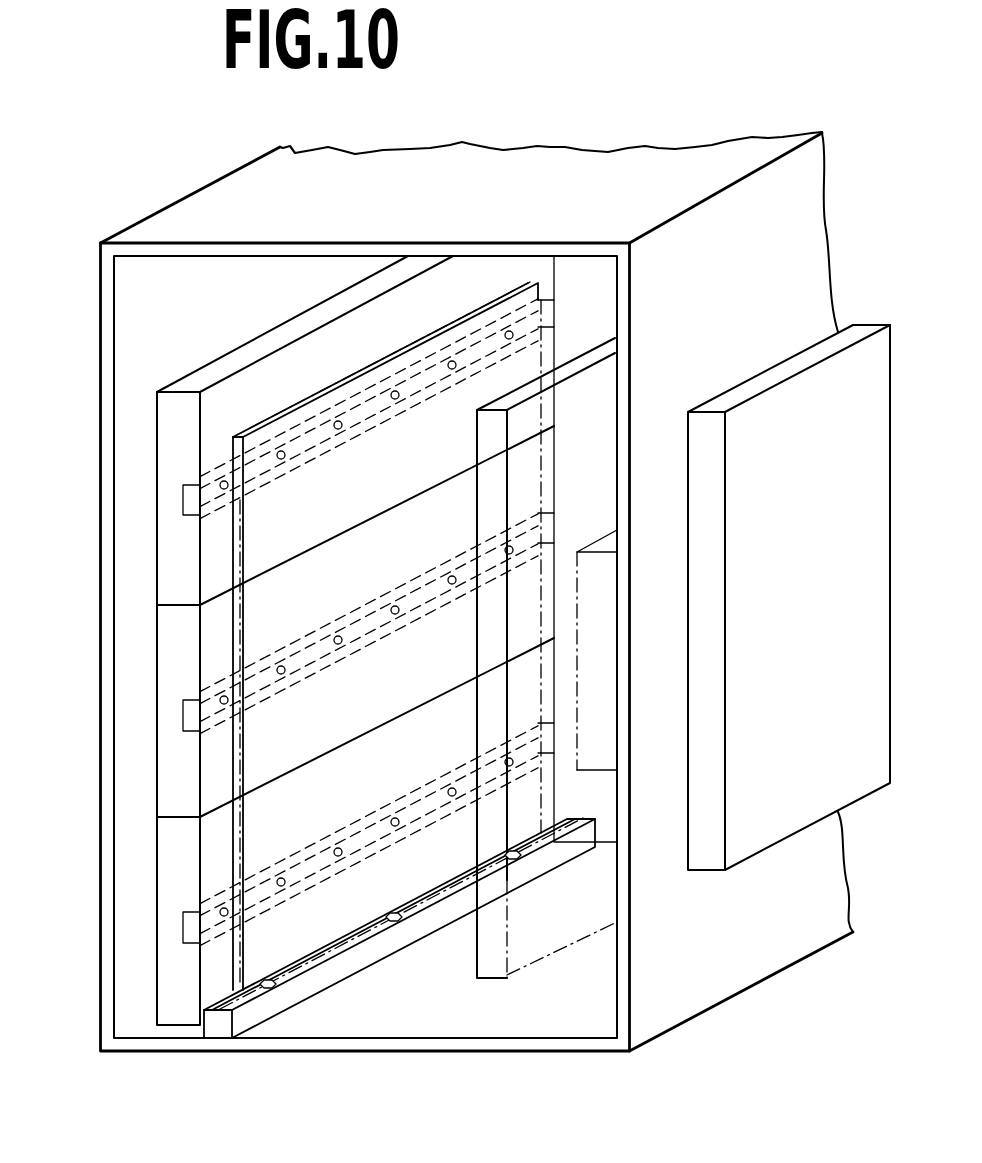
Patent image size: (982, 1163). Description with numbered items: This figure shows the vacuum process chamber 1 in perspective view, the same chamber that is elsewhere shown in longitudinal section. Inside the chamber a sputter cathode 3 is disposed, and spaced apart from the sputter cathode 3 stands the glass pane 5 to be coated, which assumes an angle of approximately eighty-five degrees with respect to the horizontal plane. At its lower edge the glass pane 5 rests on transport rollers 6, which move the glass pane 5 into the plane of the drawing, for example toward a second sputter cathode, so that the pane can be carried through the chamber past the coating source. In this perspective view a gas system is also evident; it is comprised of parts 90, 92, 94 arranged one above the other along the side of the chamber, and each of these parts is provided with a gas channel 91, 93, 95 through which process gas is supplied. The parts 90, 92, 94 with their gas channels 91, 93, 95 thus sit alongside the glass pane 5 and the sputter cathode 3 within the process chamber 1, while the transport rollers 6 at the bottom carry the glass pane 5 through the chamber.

The vacuum process chamber 1 is at (545, 182).
The sputter cathode 3 is at (497, 962).
The glass pane 5 is at (255, 945).
The transport rollers 6 is at (263, 1002).
The gas system part 90 is at (172, 431).
The gas channel 91 is at (183, 494).
The gas system part 92 is at (166, 663).
The gas channel 93 is at (183, 714).
The side panel segment 94 is at (172, 871).
The gas channel 95 is at (183, 930).